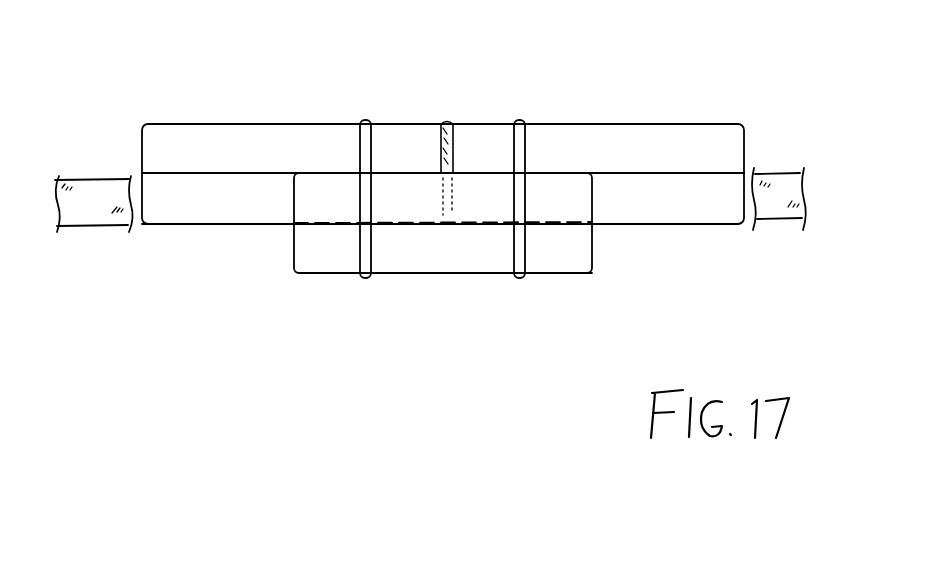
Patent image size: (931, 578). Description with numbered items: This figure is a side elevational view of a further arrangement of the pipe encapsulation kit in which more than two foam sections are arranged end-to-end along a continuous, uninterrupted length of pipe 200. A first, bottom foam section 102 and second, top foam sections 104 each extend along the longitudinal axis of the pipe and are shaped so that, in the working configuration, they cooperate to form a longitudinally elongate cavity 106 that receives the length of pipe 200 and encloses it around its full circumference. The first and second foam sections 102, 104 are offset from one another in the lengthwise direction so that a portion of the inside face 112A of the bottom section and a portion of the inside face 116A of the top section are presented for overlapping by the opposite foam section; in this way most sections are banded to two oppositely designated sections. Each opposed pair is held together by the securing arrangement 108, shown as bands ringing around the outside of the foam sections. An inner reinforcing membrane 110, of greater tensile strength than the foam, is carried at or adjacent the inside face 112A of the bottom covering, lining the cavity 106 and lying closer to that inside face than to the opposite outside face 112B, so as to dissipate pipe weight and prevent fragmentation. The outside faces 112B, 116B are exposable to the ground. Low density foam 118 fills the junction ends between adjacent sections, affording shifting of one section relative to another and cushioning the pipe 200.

The length of pipe 200 is at (777, 172).
The second foam section 104 is at (240, 137).
The outside face of the second foam section 116B is at (302, 123).
The inside face of the second foam section 116A is at (180, 177).
The first foam section 102 is at (438, 262).
The inner reinforcing membrane 110 is at (306, 228).
The inside face of the first foam section 112A is at (572, 223).
The outside face of the first foam section 112B is at (550, 273).
The securing arrangement 108 is at (374, 122).
The low density foam 118 is at (452, 124).
The longitudinally elongate cavity 106 is at (248, 213).